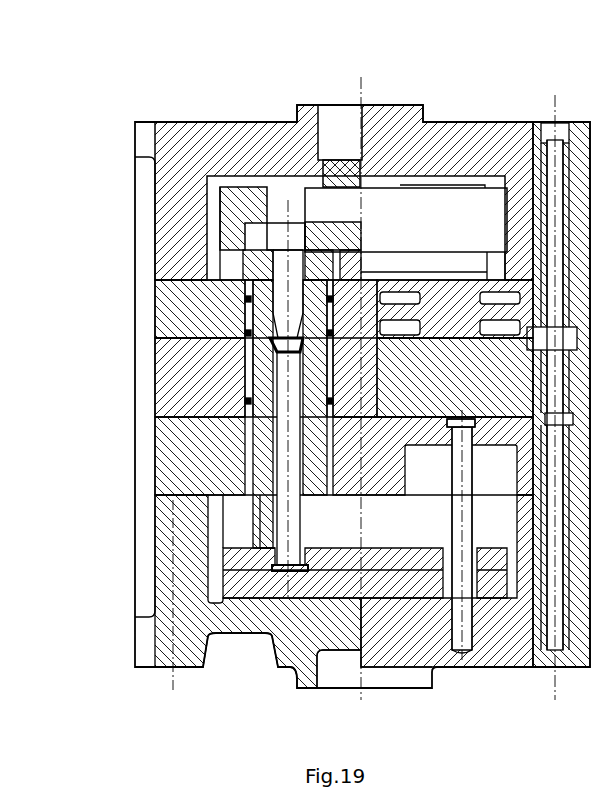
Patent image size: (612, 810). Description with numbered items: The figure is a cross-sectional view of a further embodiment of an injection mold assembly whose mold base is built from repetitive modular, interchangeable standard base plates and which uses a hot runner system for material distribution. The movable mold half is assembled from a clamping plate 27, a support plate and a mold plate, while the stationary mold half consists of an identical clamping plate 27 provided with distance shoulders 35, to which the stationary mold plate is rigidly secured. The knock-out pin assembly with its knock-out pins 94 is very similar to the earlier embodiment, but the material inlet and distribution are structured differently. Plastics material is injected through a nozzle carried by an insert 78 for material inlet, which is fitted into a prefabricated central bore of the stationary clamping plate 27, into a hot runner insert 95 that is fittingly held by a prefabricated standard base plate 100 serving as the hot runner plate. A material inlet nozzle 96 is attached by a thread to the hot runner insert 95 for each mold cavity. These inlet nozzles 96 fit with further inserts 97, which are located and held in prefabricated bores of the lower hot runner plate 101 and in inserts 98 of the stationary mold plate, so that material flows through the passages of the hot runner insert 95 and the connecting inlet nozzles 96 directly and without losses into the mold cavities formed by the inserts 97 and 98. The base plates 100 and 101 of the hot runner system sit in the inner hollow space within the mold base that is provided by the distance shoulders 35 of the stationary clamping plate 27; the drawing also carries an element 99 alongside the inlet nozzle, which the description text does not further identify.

The lower hot runner plate 101 is at (133, 123).
The clamping plate 27 is at (147, 149).
The distance shoulders 35 is at (163, 247).
The insert for material inlet 78 is at (339, 150).
The standard base plate serving as hot runner plate 100 is at (218, 208).
The material inlet nozzle 96 is at (272, 215).
The hot runner insert 95 is at (303, 202).
The insert 97 is at (325, 275).
The insert 98 is at (305, 340).
The seal carrier 99 is at (263, 392).
The knock-out pins 94 is at (290, 513).